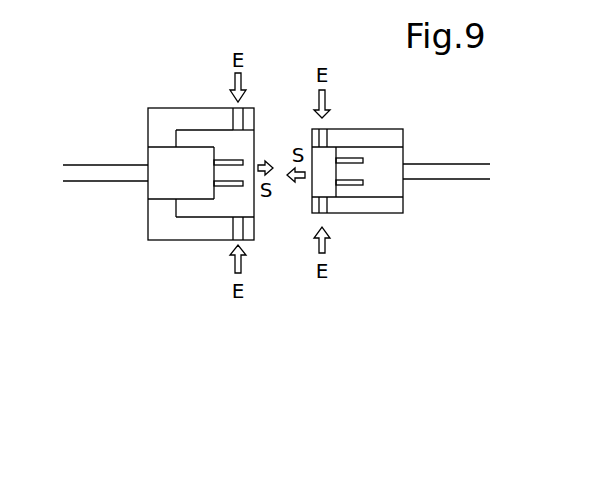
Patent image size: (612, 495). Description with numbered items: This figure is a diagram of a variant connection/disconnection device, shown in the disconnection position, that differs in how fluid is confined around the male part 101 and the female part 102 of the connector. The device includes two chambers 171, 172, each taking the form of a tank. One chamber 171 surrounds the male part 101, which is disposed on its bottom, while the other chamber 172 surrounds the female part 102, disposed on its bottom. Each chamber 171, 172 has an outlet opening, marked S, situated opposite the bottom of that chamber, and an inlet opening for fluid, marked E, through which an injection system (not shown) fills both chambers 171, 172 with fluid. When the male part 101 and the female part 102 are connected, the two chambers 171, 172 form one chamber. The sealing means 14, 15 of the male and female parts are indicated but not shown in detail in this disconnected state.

The chamber 171 is at (176, 107).
The sealing means 14 is at (203, 210).
The male part 101 is at (155, 190).
The chamber 172 is at (387, 215).
The sealing means 15 is at (329, 152).
The female part 102 is at (392, 153).